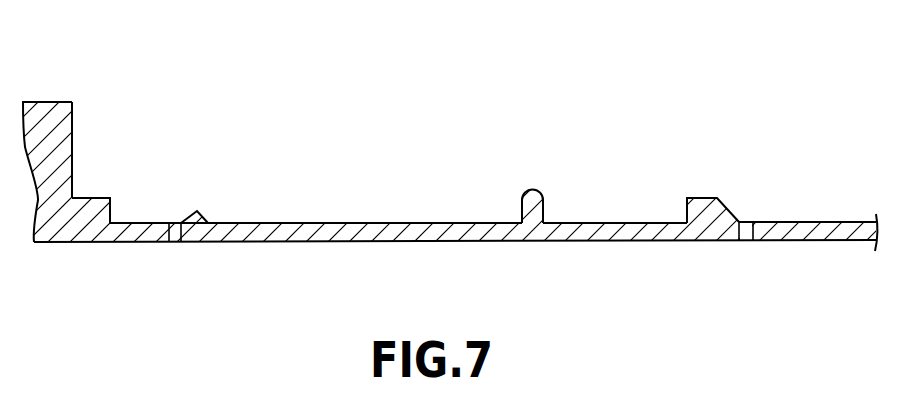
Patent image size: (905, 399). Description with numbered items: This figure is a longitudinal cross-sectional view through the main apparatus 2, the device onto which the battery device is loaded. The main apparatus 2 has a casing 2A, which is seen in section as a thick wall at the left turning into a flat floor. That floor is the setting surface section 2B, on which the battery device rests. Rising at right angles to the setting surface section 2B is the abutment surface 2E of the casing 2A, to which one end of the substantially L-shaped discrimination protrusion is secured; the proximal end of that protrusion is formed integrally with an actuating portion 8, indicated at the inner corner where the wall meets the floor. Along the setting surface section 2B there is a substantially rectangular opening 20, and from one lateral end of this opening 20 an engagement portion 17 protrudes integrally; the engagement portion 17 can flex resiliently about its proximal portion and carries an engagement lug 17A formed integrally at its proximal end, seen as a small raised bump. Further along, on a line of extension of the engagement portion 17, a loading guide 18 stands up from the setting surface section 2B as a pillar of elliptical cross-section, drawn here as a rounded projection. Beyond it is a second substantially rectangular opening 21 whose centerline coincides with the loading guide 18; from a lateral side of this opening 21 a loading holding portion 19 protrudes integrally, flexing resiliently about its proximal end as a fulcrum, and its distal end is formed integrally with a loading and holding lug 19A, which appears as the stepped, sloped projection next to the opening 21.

The main apparatus 2 is at (549, 76).
The casing 2A is at (47, 101).
The abutment surface 2E is at (78, 137).
The setting surface section 2B is at (396, 222).
The actuating portion 8 is at (117, 207).
The engagement portion 17 is at (244, 222).
The engagement lug 17A is at (198, 211).
The loading guide 18 is at (530, 192).
The loading holding portion 19 is at (632, 222).
The loading and holding lug 19A is at (712, 198).
The opening 20 is at (177, 224).
The opening 21 is at (746, 222).